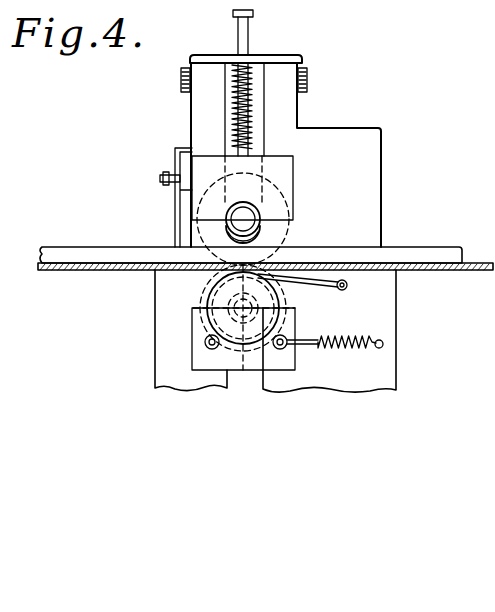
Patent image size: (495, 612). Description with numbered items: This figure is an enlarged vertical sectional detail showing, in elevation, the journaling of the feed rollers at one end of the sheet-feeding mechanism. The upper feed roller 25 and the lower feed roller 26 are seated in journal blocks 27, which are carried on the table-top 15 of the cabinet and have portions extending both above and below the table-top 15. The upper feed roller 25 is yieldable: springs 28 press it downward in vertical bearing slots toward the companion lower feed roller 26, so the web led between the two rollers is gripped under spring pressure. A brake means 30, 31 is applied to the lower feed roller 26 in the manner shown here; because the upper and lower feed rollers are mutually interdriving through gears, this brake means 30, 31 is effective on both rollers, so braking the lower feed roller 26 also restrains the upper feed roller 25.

The table-top 15 is at (476, 262).
The upper feed roller 25 is at (290, 232).
The lower feed roller 26 is at (200, 298).
The journal blocks 27 is at (357, 180).
The springs 28 is at (232, 100).
The brake means 30 is at (310, 292).
The brake means 31 is at (372, 350).